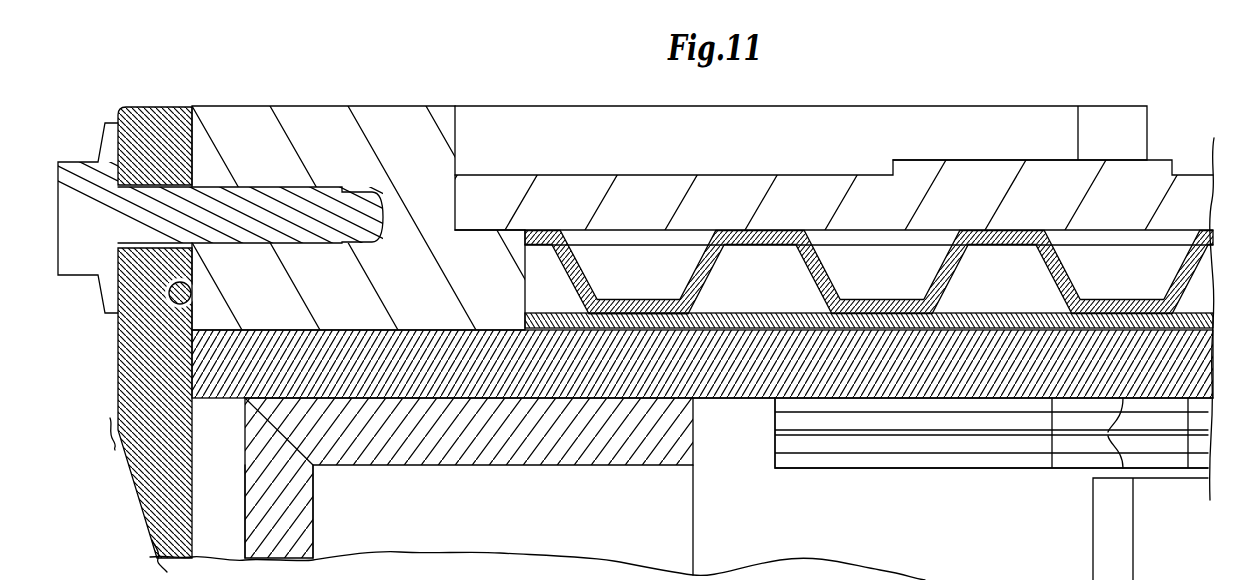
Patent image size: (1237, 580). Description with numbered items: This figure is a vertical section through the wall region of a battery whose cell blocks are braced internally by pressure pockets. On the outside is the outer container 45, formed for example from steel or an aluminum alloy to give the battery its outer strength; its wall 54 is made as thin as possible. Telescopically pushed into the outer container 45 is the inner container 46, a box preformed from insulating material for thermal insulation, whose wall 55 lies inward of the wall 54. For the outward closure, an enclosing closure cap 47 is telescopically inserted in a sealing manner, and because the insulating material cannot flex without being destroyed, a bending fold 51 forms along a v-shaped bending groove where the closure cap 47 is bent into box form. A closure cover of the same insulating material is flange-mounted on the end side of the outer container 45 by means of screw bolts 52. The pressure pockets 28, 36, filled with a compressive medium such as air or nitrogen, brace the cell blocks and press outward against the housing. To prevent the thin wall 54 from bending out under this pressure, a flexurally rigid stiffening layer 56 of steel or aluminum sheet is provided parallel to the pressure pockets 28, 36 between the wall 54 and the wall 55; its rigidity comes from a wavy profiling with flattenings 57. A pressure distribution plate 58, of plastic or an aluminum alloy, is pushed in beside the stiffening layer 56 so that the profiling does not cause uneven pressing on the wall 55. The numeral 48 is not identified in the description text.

The outer container 45 is at (858, 197).
The inner container 46 is at (215, 363).
The closure cap 47 is at (552, 448).
The lower support 48 is at (362, 577).
The bending fold 51 is at (276, 435).
The screw bolt 52 is at (140, 213).
The wall of the outer container 54 is at (648, 192).
The wall of the inner container 55 is at (737, 380).
The stiffening layer 56 is at (1067, 283).
The flattening 57 is at (630, 313).
The pressure distribution plate 58 is at (789, 320).
The pressure pocket 28 is at (932, 445).
The pressure pocket 36 is at (932, 445).